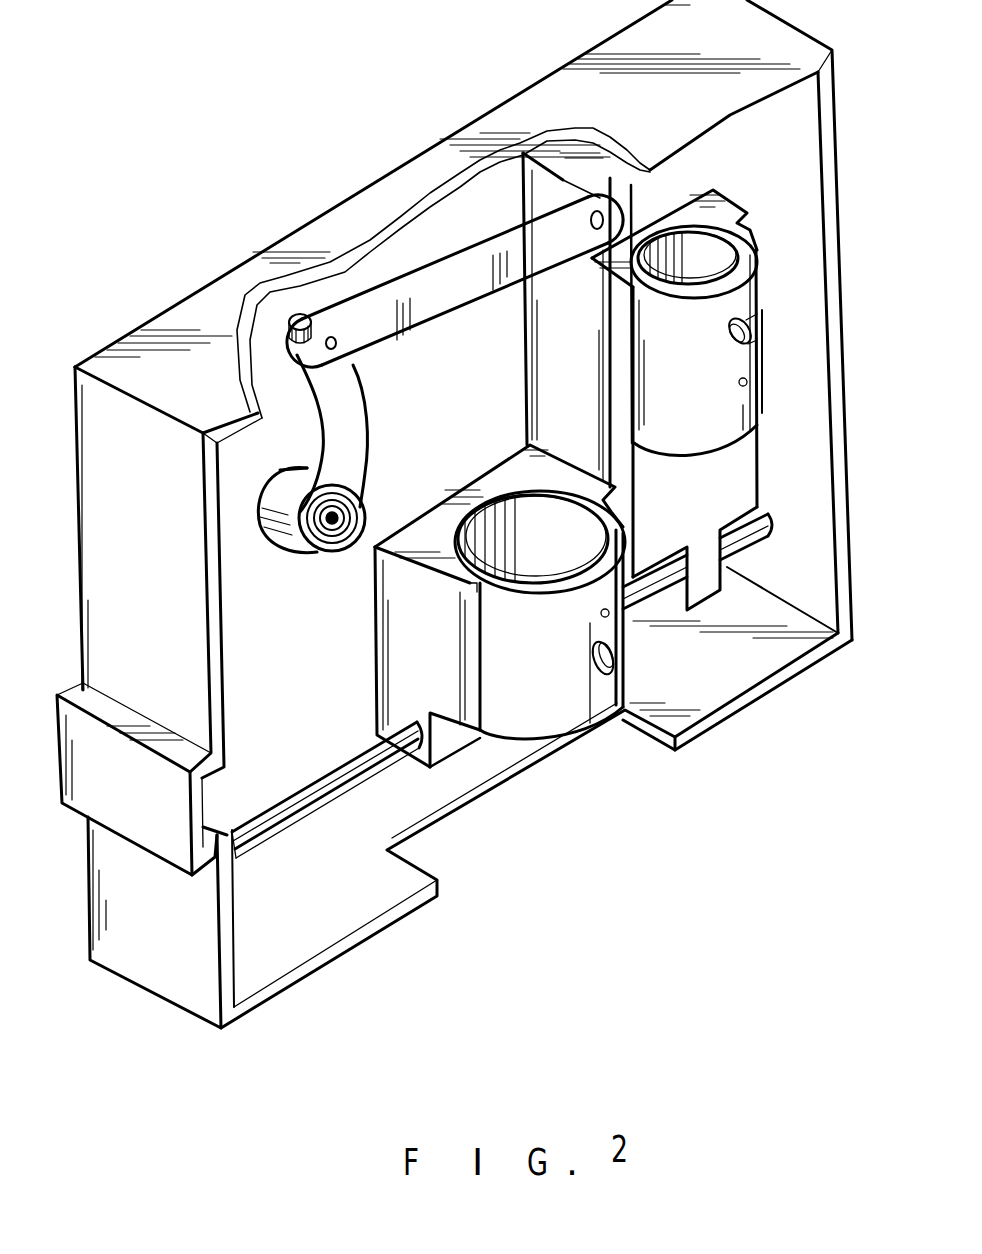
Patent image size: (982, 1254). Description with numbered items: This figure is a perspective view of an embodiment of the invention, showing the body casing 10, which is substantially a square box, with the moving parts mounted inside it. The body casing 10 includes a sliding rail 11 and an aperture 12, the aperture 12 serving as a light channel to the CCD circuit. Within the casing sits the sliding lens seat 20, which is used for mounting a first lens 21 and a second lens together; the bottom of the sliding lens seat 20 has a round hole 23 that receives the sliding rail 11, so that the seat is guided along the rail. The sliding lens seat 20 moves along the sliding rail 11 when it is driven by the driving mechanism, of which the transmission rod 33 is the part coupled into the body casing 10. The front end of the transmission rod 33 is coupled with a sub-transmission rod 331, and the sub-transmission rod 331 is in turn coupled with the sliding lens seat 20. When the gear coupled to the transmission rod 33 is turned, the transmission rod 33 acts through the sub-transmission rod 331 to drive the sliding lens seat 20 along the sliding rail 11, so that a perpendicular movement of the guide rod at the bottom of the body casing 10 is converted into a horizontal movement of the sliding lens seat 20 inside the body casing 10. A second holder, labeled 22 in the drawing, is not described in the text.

The body casing 10 is at (247, 1002).
The sliding rail 11 is at (257, 820).
The aperture 12 is at (728, 712).
The sliding lens seat 20 is at (522, 472).
The first lens 21 is at (580, 737).
The upper cylindrical holder 22 is at (763, 357).
The round hole 23 is at (430, 737).
The transmission rod 33 is at (335, 448).
The sub-transmission rod 331 is at (442, 263).